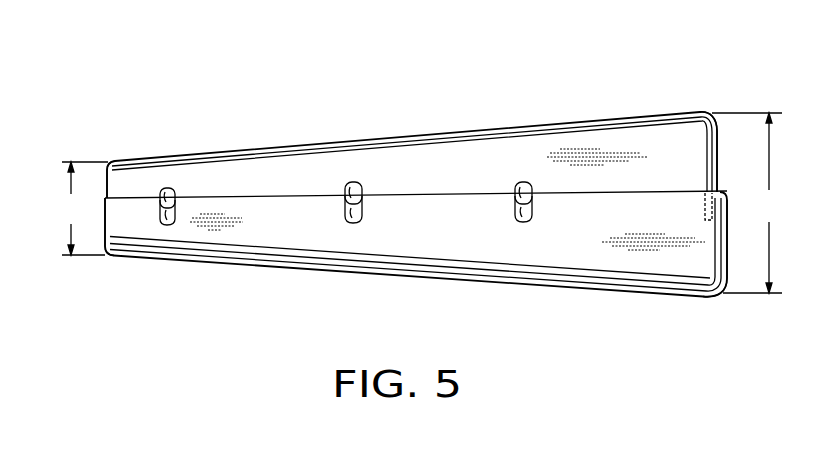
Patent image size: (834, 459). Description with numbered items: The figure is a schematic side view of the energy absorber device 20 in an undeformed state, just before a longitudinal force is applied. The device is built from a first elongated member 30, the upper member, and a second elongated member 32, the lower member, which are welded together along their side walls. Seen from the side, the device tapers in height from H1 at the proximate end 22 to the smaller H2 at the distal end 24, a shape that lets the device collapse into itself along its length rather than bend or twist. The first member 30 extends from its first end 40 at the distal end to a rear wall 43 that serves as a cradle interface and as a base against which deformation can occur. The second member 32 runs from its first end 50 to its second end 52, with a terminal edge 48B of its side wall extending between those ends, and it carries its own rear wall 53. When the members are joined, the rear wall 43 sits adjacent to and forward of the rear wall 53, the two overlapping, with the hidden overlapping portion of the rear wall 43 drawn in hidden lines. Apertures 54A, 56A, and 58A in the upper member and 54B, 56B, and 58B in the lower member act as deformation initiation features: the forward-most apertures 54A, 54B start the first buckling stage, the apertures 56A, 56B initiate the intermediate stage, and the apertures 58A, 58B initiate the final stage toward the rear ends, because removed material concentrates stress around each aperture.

The energy absorber device 20 is at (648, 53).
The proximate end 22 is at (722, 118).
The distal end 24 is at (107, 190).
The first elongated member 30 is at (453, 128).
The second elongated member 32 is at (452, 253).
The first end 40 is at (106, 167).
The rear wall 43 is at (718, 155).
The terminal edge 48B is at (252, 198).
The first end 50 is at (100, 233).
The second end 52 is at (728, 295).
The rear wall 53 is at (728, 270).
The aperture 54A is at (168, 193).
The aperture 54B is at (170, 217).
The aperture 56A is at (353, 197).
The aperture 56B is at (353, 217).
The aperture 58A is at (520, 188).
The aperture 58B is at (520, 217).
The height H1 is at (747, 203).
The height H2 is at (84, 208).